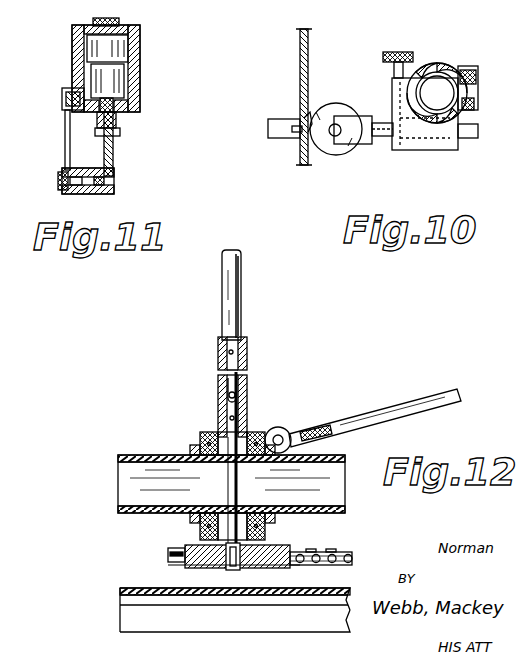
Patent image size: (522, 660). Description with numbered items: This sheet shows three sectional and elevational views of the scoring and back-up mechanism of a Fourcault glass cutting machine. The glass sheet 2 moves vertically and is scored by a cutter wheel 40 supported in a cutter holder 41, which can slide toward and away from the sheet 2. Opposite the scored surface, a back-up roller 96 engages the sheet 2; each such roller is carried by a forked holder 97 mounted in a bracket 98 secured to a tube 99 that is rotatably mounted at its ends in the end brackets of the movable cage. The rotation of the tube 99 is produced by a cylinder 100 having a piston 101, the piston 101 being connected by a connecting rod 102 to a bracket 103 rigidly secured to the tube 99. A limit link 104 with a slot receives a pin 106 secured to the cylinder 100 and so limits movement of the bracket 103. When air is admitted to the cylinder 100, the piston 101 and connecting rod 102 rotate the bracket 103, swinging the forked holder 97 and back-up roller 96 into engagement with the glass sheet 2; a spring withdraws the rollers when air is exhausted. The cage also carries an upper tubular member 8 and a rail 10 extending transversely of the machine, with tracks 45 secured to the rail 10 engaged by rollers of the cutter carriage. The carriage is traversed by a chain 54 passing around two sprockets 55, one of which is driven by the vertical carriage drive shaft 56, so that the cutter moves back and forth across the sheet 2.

In FIG. 11, the cylinder 100 is at (146, 38).
In FIG. 11, the piston 101 is at (128, 113).
In FIG. 11, the connecting rod 102 is at (114, 155).
In FIG. 11, the bracket 103 is at (75, 166).
In FIG. 11, the limit link 104 is at (66, 120).
In FIG. 11, the pin 106 is at (63, 98).
In FIG. 10, the glass sheet 2 is at (300, 54).
In FIG. 10, the cutter wheel 40 is at (302, 126).
In FIG. 10, the cutter holder 41 is at (268, 128).
In FIG. 10, the back-up roller 96 is at (330, 152).
In FIG. 10, the forked holder 97 is at (381, 140).
In FIG. 10, the bracket 98 is at (448, 150).
In FIG. 10, the tube 99 is at (440, 72).
In FIG. 12, the vertical carriage drive shaft 56 is at (242, 308).
In FIG. 12, the upper tubular member 8 is at (156, 455).
In FIG. 12, the chain 54 is at (341, 556).
In FIG. 12, the sprocket 55 is at (282, 565).
In FIG. 12, the rail 10 is at (122, 596).
In FIG. 12, the track 45 is at (122, 622).